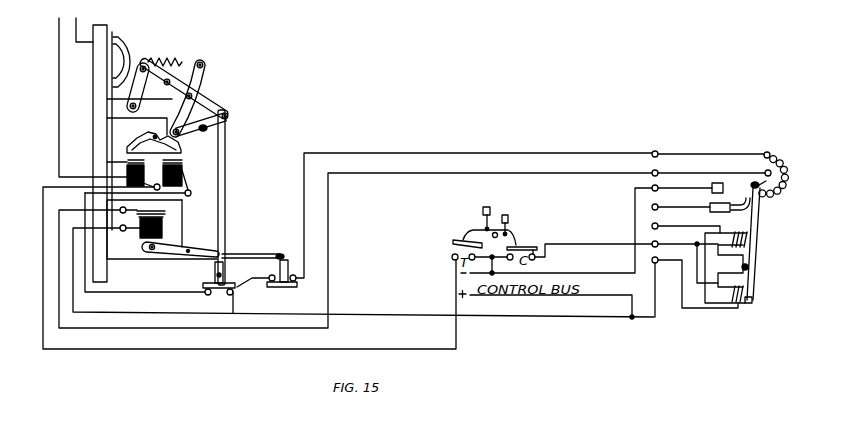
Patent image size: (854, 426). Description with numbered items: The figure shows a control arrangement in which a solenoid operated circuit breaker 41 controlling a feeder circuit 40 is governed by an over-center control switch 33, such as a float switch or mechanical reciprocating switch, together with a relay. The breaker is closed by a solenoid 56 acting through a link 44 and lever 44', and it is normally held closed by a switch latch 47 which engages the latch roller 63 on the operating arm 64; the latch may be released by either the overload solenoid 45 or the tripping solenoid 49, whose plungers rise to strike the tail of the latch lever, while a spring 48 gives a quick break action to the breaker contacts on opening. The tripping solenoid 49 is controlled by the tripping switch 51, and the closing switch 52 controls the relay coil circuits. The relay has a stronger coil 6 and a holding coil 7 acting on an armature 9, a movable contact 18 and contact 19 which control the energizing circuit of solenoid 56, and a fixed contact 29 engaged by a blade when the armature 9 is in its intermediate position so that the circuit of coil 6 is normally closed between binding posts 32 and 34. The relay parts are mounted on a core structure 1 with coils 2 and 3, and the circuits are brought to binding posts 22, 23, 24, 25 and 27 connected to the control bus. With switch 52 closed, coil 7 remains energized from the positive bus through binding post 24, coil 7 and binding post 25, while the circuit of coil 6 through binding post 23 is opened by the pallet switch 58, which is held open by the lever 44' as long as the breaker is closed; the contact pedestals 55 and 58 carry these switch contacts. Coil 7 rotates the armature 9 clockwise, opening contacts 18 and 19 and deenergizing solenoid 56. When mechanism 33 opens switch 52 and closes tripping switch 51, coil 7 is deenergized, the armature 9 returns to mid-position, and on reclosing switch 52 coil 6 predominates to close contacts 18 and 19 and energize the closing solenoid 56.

The feeder circuit 40 is at (77, 45).
The circuit breaker 41 is at (129, 50).
The spring 48 is at (184, 58).
The latch roller 63 is at (177, 131).
The operating arm 64 is at (229, 115).
The switch latch 47 is at (186, 139).
The overload solenoid 45 is at (131, 153).
The tripping solenoid 49 is at (183, 173).
The link 44 is at (233, 197).
The solenoid 56 is at (163, 230).
The lever 44' is at (253, 247).
The contact pedestal 55 is at (219, 287).
The pallet switch 58 is at (282, 283).
The over-center control switch 33 is at (491, 213).
The tripping switch 51 is at (457, 240).
The closing switch 52 is at (527, 246).
The binding post 34 is at (652, 153).
The terminal 22 is at (652, 172).
The terminal 27 is at (652, 187).
The binding post 32 is at (653, 206).
The binding post 23 is at (653, 225).
The binding post 24 is at (653, 243).
The binding post 25 is at (653, 259).
The relay contact 19 is at (712, 187).
The movable contact 18 is at (751, 185).
The fixed contact 29 is at (710, 207).
The relay coil 6 is at (705, 236).
The relay core 1 is at (726, 266).
The relay coil 2 is at (745, 232).
The relay coil 3 is at (751, 304).
The armature 9 is at (749, 267).
The relay coil 7 is at (733, 306).